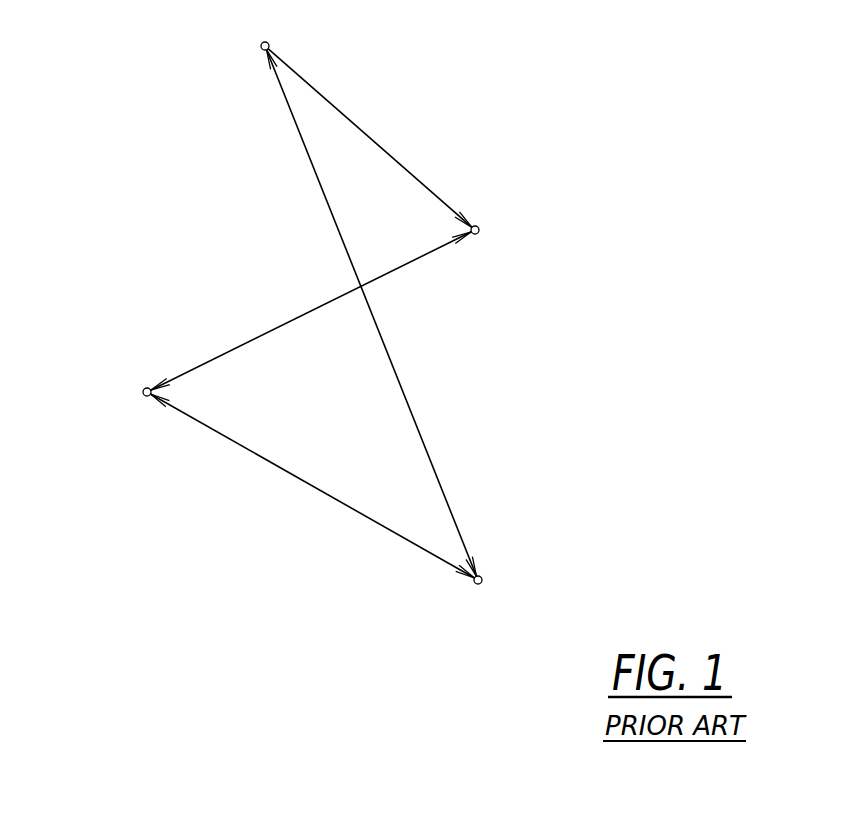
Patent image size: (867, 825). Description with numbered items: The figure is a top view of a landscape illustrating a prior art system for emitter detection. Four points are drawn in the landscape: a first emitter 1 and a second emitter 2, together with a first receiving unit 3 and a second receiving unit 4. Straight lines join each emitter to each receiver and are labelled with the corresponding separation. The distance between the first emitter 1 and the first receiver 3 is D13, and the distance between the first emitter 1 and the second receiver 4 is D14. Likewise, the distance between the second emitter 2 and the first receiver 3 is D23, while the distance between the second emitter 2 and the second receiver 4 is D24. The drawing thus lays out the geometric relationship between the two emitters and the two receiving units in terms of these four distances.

The first emitter 1 is at (143, 395).
The second emitter 2 is at (258, 45).
The first receiving unit 3 is at (484, 575).
The second receiving unit 4 is at (482, 228).
The distance between second emitter and second receiver D24 is at (391, 152).
The distance between second emitter and first receiver D23 is at (316, 183).
The distance between first emitter and second receiver D14 is at (397, 270).
The distance between first emitter and first receiver D13 is at (280, 468).